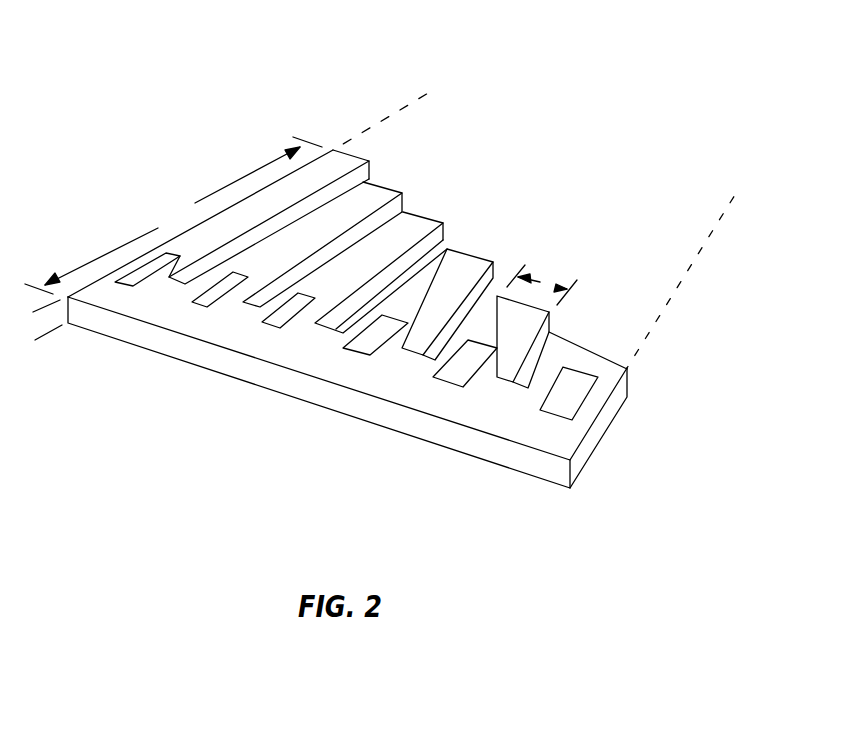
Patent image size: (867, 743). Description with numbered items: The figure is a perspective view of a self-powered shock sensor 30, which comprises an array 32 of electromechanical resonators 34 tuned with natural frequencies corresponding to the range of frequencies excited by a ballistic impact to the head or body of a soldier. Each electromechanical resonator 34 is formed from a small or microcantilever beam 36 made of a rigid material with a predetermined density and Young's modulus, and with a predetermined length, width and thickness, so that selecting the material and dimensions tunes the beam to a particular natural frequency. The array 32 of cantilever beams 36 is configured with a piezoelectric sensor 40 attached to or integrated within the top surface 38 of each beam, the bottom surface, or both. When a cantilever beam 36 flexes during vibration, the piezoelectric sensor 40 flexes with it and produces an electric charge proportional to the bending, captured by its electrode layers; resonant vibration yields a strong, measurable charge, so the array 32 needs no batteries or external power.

The self-powered shock sensor 30 is at (122, 120).
The array 32 is at (738, 190).
The electromechanical resonator 34 is at (384, 184).
The cantilever beam 36 is at (552, 315).
The top surface 38 is at (473, 263).
The piezoelectric sensor 40 is at (200, 297).